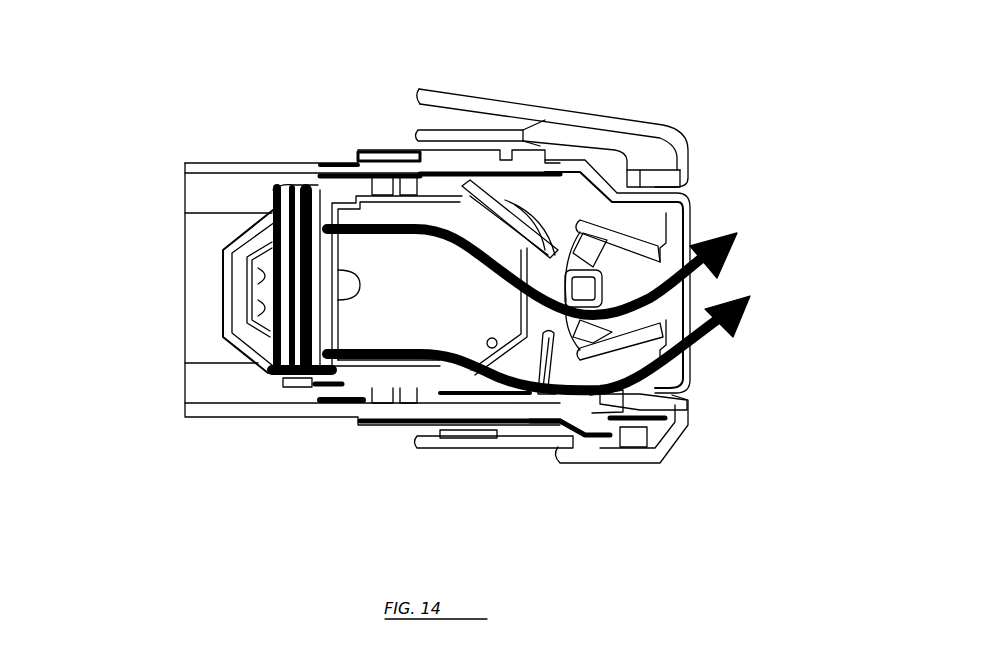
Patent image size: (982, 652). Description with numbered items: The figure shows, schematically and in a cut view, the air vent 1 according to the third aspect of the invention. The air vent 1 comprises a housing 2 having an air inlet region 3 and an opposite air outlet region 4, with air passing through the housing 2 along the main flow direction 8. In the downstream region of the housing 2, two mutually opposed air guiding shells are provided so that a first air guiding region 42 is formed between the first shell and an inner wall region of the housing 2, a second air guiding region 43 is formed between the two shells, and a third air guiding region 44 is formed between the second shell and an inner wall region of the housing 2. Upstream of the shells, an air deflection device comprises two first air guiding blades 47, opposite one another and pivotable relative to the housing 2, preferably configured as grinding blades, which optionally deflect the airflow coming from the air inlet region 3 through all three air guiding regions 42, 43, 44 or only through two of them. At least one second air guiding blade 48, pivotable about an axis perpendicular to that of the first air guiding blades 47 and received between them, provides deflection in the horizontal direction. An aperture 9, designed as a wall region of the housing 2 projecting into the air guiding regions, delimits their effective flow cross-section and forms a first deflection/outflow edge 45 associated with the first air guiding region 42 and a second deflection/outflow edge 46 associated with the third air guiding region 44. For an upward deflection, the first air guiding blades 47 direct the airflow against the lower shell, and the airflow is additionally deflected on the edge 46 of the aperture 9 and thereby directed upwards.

The air vent 1 is at (163, 86).
The housing 2 is at (230, 166).
The air inlet region 3 is at (122, 271).
The air outlet region 4 is at (790, 254).
The main flow direction 8 is at (300, 106).
The aperture 9 is at (682, 143).
The first air guiding region 42 is at (608, 212).
The second air guiding region 43 is at (612, 285).
The third air guiding region 44 is at (622, 362).
The first deflection/outflow edge 45 is at (642, 183).
The second deflection/outflow edge 46 is at (622, 397).
The first air guiding blades 47 is at (500, 215).
The second air guiding blade 48 is at (393, 318).